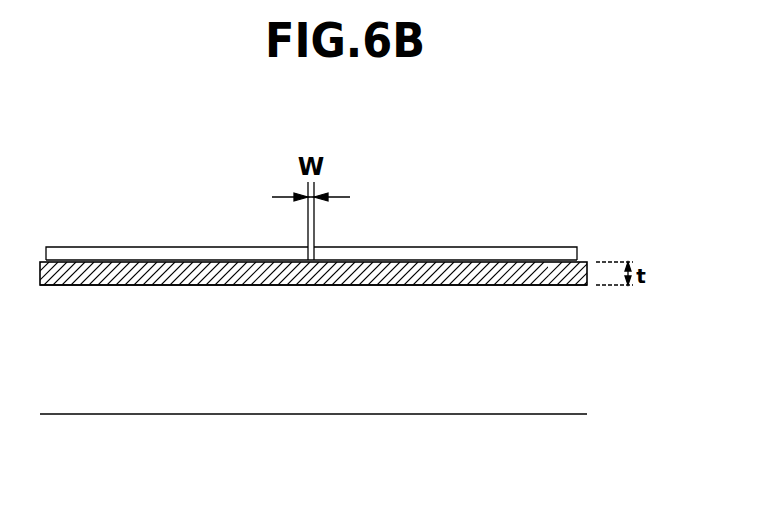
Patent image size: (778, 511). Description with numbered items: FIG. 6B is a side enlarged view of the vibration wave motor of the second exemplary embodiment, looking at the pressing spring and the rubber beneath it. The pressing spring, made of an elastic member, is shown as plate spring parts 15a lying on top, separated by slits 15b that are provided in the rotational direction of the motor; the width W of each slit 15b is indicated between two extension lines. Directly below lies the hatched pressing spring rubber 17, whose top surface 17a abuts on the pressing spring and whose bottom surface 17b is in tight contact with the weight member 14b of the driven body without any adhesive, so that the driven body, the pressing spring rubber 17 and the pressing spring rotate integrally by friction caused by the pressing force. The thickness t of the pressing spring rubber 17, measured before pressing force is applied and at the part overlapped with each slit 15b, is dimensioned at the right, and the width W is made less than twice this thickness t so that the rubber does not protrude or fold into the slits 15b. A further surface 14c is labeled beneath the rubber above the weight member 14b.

The weight member 14b is at (462, 388).
The substrate surface 14c is at (350, 285).
The plate spring part 15a is at (127, 257).
The slit 15b is at (306, 259).
The pressing spring rubber 17 is at (337, 184).
The top surface 17a is at (526, 262).
The bottom surface 17b is at (550, 285).